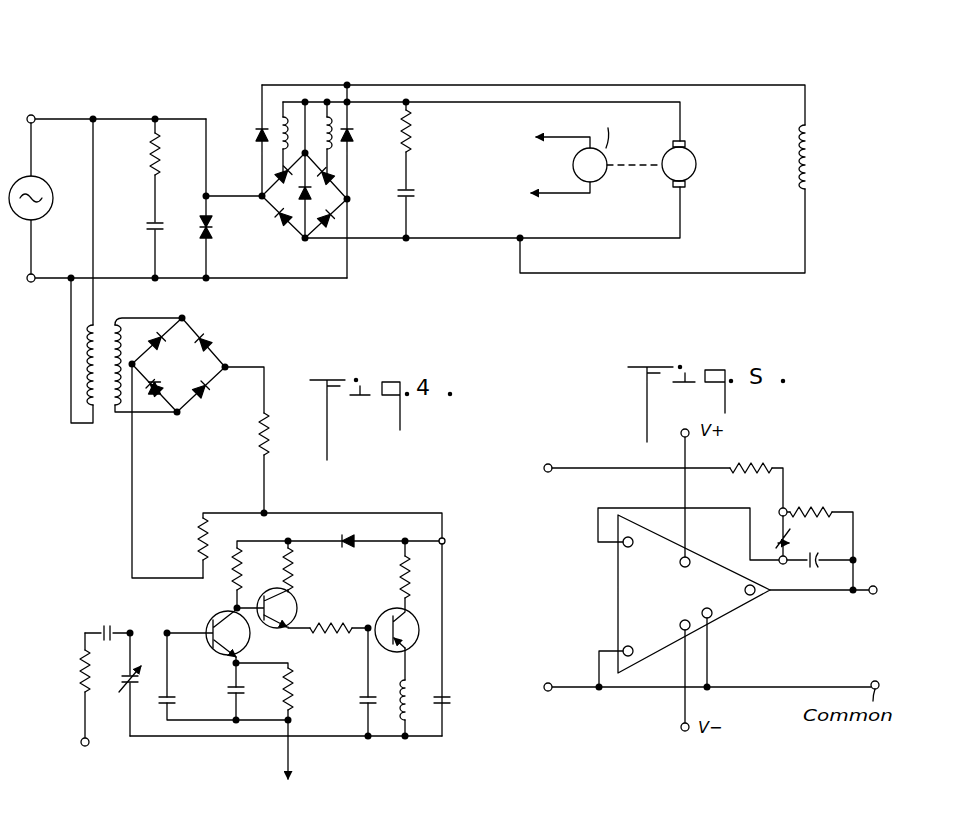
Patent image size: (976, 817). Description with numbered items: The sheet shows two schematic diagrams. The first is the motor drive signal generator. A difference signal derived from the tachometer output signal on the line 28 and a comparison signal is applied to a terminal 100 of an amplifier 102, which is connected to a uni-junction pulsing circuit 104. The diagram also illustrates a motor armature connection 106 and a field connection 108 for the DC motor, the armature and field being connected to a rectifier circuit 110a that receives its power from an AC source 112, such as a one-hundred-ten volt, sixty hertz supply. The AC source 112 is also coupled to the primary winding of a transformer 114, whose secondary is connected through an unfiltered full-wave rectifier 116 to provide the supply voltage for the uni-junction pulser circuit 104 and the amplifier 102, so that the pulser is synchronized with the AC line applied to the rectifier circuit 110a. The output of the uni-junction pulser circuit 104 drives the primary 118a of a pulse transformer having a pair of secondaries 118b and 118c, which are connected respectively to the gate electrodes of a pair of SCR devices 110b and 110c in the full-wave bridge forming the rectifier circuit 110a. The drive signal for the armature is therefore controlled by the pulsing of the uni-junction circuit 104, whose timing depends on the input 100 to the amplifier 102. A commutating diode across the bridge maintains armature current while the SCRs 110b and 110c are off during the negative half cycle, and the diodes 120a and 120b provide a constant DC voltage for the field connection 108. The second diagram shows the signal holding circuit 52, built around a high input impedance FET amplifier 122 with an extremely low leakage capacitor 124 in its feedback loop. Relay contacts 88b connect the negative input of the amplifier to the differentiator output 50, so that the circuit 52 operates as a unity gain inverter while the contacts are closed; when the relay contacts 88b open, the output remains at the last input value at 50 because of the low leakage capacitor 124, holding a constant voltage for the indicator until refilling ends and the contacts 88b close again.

In FIG. 4, the AC source 112 is at (49, 192).
In FIG. 4, the rectifier circuit 110a is at (272, 214).
In FIG. 4, the SCR device 110b is at (280, 178).
In FIG. 4, the SCR device 110c is at (332, 178).
In FIG. 4, the pulse transformer secondary 118b is at (278, 120).
In FIG. 4, the pulse transformer secondary 118c is at (330, 112).
In FIG. 4, the diode 120a is at (257, 135).
In FIG. 4, the diode 120b is at (352, 130).
In FIG. 4, the tachometer output line 28 is at (548, 138).
In FIG. 4, the motor armature connection 106 is at (703, 158).
In FIG. 4, the motor field connection 108 is at (819, 160).
In FIG. 4, the transformer 114 is at (102, 423).
In FIG. 4, the unfiltered full-wave rectifier 116 is at (223, 350).
In FIG. 4, the amplifier 102 is at (207, 625).
In FIG. 4, the uni-junction pulsing circuit 104 is at (421, 620).
In FIG. 4, the pulse transformer primary 118a is at (413, 690).
In FIG. 4, the input terminal 100 is at (89, 746).
In FIG. 5, the FET amplifier 122 is at (738, 610).
In FIG. 5, the differentiator output 50 is at (552, 466).
In FIG. 5, the signal holding circuit 52 is at (807, 508).
In FIG. 5, the relay contacts 88b is at (771, 530).
In FIG. 5, the low leakage capacitor 124 is at (830, 553).